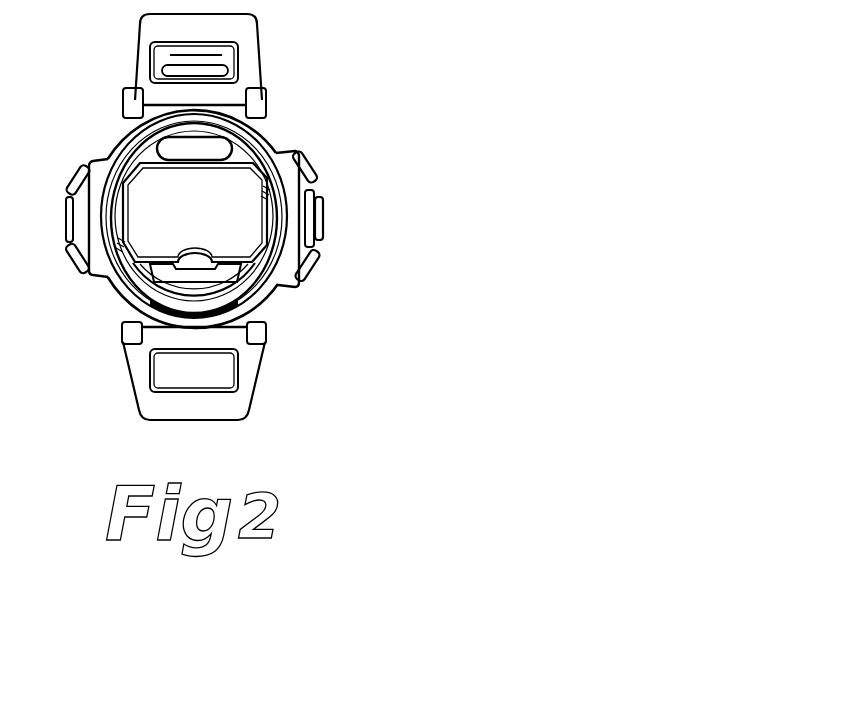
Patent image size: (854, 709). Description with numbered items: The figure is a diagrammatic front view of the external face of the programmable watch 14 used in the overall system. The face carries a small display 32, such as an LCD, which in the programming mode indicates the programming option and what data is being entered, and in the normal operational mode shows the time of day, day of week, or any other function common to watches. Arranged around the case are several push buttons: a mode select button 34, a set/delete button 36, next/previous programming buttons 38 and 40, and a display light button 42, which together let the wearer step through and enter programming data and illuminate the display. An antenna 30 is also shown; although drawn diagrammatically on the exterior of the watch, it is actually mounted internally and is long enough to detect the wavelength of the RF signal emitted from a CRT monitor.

The programmable watch 14 is at (386, 53).
The antenna 30 is at (202, 143).
The display 32 is at (141, 188).
The mode select button 34 is at (327, 223).
The set/delete button 36 is at (320, 272).
The next programming button 38 is at (319, 162).
The previous programming button 40 is at (70, 265).
The display light button 42 is at (72, 180).